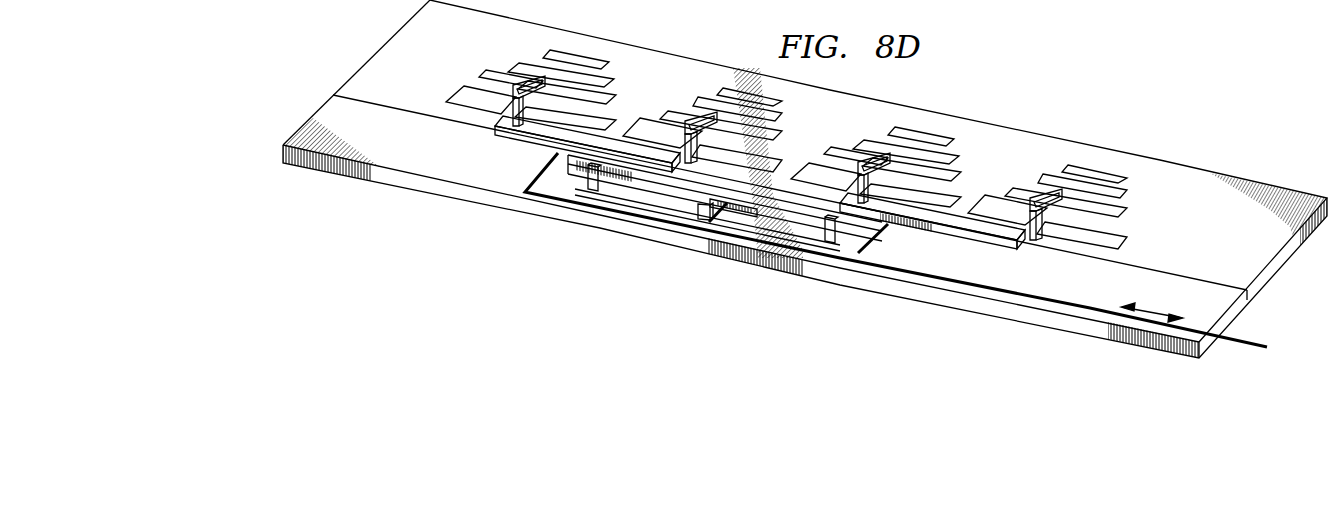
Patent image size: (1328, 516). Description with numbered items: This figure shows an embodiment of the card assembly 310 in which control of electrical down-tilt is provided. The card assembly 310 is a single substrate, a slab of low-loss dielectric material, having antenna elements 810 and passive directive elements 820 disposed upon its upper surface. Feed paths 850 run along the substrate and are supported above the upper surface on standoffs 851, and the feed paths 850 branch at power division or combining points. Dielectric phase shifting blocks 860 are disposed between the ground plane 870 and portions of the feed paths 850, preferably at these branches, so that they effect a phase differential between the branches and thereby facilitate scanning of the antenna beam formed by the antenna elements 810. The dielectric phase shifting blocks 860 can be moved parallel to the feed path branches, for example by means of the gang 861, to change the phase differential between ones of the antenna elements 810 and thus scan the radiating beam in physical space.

The card assembly 310 is at (380, 55).
The antenna elements 810 is at (655, 135).
The passive directive elements 820 is at (542, 60).
The feed paths 850 is at (633, 188).
The post 851 is at (585, 190).
The dielectric phase shifting blocks 860 is at (548, 148).
The gang 861 is at (1237, 348).
The ground plane 870 is at (1180, 287).